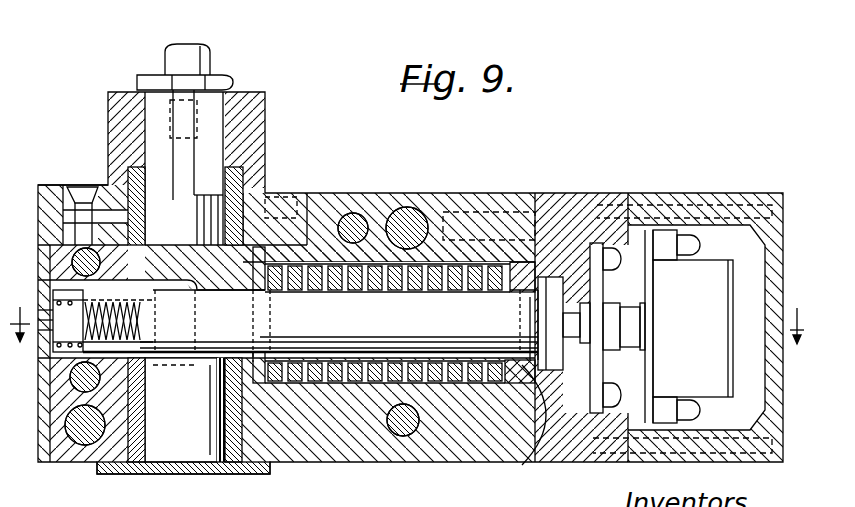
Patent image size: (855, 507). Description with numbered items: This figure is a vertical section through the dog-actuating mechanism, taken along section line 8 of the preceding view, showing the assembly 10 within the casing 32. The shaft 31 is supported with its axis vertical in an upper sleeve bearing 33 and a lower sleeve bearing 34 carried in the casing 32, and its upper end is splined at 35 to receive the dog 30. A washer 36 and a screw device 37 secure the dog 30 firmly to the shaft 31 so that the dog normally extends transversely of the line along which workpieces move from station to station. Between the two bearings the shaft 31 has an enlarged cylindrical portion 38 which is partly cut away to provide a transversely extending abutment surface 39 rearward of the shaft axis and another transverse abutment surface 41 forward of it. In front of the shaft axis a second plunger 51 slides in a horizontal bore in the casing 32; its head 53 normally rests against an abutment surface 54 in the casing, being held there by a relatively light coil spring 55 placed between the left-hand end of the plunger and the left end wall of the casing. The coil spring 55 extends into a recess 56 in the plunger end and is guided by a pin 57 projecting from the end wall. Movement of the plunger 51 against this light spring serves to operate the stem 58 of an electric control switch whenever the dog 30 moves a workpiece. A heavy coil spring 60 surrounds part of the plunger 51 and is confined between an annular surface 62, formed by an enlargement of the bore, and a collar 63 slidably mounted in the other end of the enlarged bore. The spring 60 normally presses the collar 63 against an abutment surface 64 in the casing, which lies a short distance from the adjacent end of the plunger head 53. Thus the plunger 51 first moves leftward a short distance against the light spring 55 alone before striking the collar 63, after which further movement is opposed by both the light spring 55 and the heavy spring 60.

The actuator assembly 10 is at (143, 0).
The section line 8 is at (407, 314).
The dog 30 is at (252, 96).
The shaft 31 is at (193, 437).
The casing 32 is at (37, 213).
The sleeve bearing 33 is at (248, 185).
The sleeve bearing 34 is at (137, 444).
The splined upper end 35 is at (230, 110).
The washer 36 is at (146, 73).
The screw device 37 is at (187, 117).
The enlarged cylindrical portion 38 is at (183, 250).
The abutment surface 39 is at (200, 302).
The abutment surface 41 is at (150, 312).
The second plunger 51 is at (450, 325).
The head 53 is at (548, 272).
The abutment surface 54 is at (578, 445).
The coil spring 55 is at (62, 262).
The recess 56 is at (576, 336).
The pin 57 is at (60, 298).
The stem 58 is at (689, 326).
The heavy coil spring 60 is at (374, 358).
The annular surface 62 is at (260, 360).
The collar 63 is at (514, 352).
The abutment surface 64 is at (528, 462).